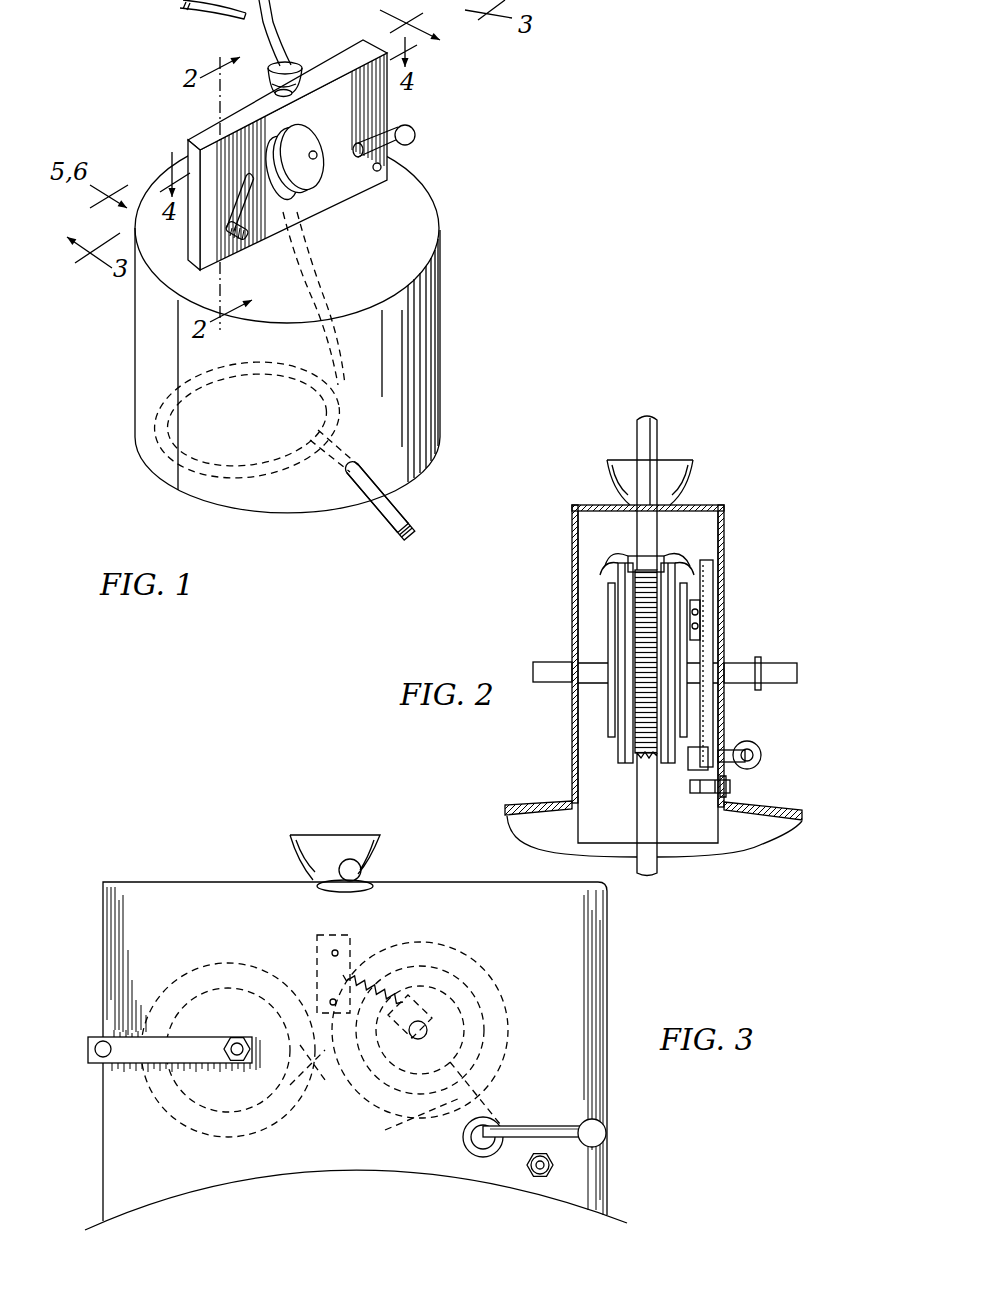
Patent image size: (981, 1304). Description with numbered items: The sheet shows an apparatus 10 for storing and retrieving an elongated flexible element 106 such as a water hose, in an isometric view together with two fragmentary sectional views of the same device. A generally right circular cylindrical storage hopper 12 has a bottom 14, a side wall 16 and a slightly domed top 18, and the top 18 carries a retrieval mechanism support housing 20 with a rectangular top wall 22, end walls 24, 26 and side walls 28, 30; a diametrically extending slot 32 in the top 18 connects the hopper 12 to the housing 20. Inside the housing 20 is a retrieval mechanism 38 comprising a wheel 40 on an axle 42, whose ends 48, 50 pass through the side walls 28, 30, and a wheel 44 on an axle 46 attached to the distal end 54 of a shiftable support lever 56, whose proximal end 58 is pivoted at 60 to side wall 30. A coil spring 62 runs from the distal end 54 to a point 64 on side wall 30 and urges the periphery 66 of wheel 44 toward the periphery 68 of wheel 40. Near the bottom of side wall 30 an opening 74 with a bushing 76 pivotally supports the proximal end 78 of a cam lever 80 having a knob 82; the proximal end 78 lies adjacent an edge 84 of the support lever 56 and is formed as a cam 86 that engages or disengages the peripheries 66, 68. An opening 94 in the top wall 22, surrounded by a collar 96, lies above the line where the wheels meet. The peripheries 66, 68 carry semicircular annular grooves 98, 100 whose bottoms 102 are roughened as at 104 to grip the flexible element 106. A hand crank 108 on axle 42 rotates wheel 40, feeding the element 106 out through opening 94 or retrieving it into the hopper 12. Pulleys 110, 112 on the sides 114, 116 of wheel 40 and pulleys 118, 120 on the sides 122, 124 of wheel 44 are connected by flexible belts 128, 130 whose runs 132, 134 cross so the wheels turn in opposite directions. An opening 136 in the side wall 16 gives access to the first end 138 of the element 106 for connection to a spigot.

In FIG. 1, the apparatus 10 is at (468, 192).
In FIG. 1, the storage hopper 12 is at (432, 296).
In FIG. 1, the bottom 14 is at (252, 472).
In FIG. 1, the side wall 16 is at (437, 445).
In FIG. 1, the top 18 is at (277, 313).
In FIG. 2, the top 18 is at (790, 818).
In FIG. 1, the retrieval mechanism support housing 20 is at (363, 115).
In FIG. 2, the retrieval mechanism support housing 20 is at (738, 503).
In FIG. 3, the retrieval mechanism support housing 20 is at (463, 882).
In FIG. 1, the top wall 22 is at (208, 132).
In FIG. 2, the top wall 22 is at (597, 503).
In FIG. 3, the top wall 22 is at (229, 882).
In FIG. 1, the end wall 24 is at (198, 234).
In FIG. 3, the end wall 24 is at (103, 991).
In FIG. 1, the end wall 26 is at (364, 43).
In FIG. 3, the end wall 26 is at (607, 972).
In FIG. 1, the side wall 28 is at (345, 51).
In FIG. 1, the side wall 30 is at (345, 143).
In FIG. 2, the side wall 30 is at (725, 556).
In FIG. 3, the side wall 30 is at (565, 1006).
In FIG. 2, the slot 32 is at (712, 812).
In FIG. 1, the retrieval mechanism 38 is at (280, 143).
In FIG. 2, the retrieval mechanism 38 is at (570, 512).
In FIG. 3, the retrieval mechanism 38 is at (208, 1145).
In FIG. 1, the wheel 40 is at (268, 183).
In FIG. 3, the wheel 40 is at (205, 1120).
In FIG. 2, the axle 42 is at (547, 683).
In FIG. 3, the axle 42 is at (233, 1055).
In FIG. 1, the wheel 44 is at (307, 168).
In FIG. 2, the wheel 44 is at (680, 578).
In FIG. 3, the wheel 44 is at (437, 1110).
In FIG. 3, the axle 46 is at (420, 1028).
In FIG. 2, the end 48 is at (562, 672).
In FIG. 2, the end 50 is at (727, 688).
In FIG. 3, the distal end 54 is at (395, 1006).
In FIG. 2, the shiftable support lever 56 is at (713, 640).
In FIG. 3, the shiftable support lever 56 is at (480, 1125).
In FIG. 3, the proximal end 58 is at (520, 1158).
In FIG. 3, the pivot point 60 is at (547, 1192).
In FIG. 3, the coil spring 62 is at (397, 953).
In FIG. 3, the point 64 is at (348, 957).
In FIG. 2, the periphery 66 is at (603, 563).
In FIG. 3, the periphery 66 is at (437, 948).
In FIG. 3, the periphery 68 is at (190, 972).
In FIG. 3, the opening 74 is at (473, 1157).
In FIG. 2, the bushing 76 is at (762, 752).
In FIG. 3, the bushing 76 is at (482, 1152).
In FIG. 2, the proximal end 78 is at (762, 758).
In FIG. 3, the proximal end 78 is at (565, 1138).
In FIG. 2, the cam lever 80 is at (768, 762).
In FIG. 3, the cam lever 80 is at (520, 1118).
In FIG. 2, the knob 82 is at (742, 770).
In FIG. 3, the knob 82 is at (600, 1141).
In FIG. 3, the edge 84 is at (423, 1097).
In FIG. 2, the cam 86 is at (693, 765).
In FIG. 1, the opening 94 is at (280, 78).
In FIG. 3, the opening 94 is at (362, 865).
In FIG. 1, the collar 96 is at (292, 73).
In FIG. 2, the collar 96 is at (683, 461).
In FIG. 3, the collar 96 is at (311, 836).
In FIG. 2, the annular groove 98 is at (672, 573).
In FIG. 2, the annular groove 100 is at (672, 560).
In FIG. 2, the groove bottoms 102 is at (640, 557).
In FIG. 2, the roughening 104 is at (645, 758).
In FIG. 1, the elongated flexible element 106 is at (283, 33).
In FIG. 2, the elongated flexible element 106 is at (658, 429).
In FIG. 1, the hand crank 108 is at (253, 218).
In FIG. 2, the hand crank 108 is at (805, 673).
In FIG. 3, the hand crank 108 is at (84, 1053).
In FIG. 2, the pulley 110 is at (762, 658).
In FIG. 3, the pulley 110 is at (237, 983).
In FIG. 2, the pulley 112 is at (608, 618).
In FIG. 2, the side 114 is at (718, 612).
In FIG. 3, the side 114 is at (172, 1000).
In FIG. 2, the side 116 is at (618, 742).
In FIG. 2, the pulley 118 is at (705, 595).
In FIG. 3, the pulley 118 is at (468, 957).
In FIG. 2, the pulley 120 is at (608, 592).
In FIG. 2, the side 122 is at (676, 568).
In FIG. 3, the side 122 is at (500, 987).
In FIG. 2, the side 124 is at (618, 566).
In FIG. 2, the flexible belt 128 is at (677, 700).
In FIG. 3, the flexible belt 128 is at (310, 1047).
In FIG. 2, the flexible belt 130 is at (608, 720).
In FIG. 3, the belt run 132 is at (298, 1037).
In FIG. 3, the belt run 134 is at (345, 1060).
In FIG. 1, the opening 136 is at (352, 477).
In FIG. 1, the first end 138 is at (382, 530).